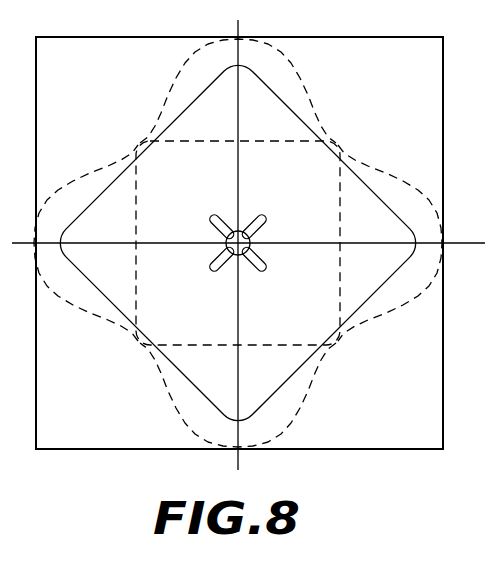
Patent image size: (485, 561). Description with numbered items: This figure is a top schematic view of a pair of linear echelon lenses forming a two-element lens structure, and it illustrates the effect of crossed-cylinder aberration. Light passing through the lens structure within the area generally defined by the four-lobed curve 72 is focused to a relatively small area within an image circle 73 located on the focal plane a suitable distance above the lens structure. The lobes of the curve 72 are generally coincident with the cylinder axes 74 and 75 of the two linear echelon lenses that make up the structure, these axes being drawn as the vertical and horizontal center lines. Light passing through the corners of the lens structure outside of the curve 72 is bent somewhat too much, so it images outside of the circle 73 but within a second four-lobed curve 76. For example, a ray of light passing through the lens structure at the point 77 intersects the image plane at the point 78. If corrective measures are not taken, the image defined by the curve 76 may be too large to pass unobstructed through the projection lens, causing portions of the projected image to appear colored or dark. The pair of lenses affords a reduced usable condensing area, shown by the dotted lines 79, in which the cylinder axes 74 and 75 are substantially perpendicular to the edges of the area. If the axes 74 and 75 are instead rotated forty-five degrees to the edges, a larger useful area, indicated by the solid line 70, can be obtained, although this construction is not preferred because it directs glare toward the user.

The solid line 70 is at (305, 118).
The four-lobed curve 72 is at (398, 180).
The image circle 73 is at (250, 240).
The cylinder axis 74 is at (240, 23).
The cylinder axis 75 is at (453, 242).
The four-lobed curve 76 is at (215, 215).
The point 77 is at (393, 88).
The point 78 is at (212, 266).
The dotted lines 79 is at (271, 120).